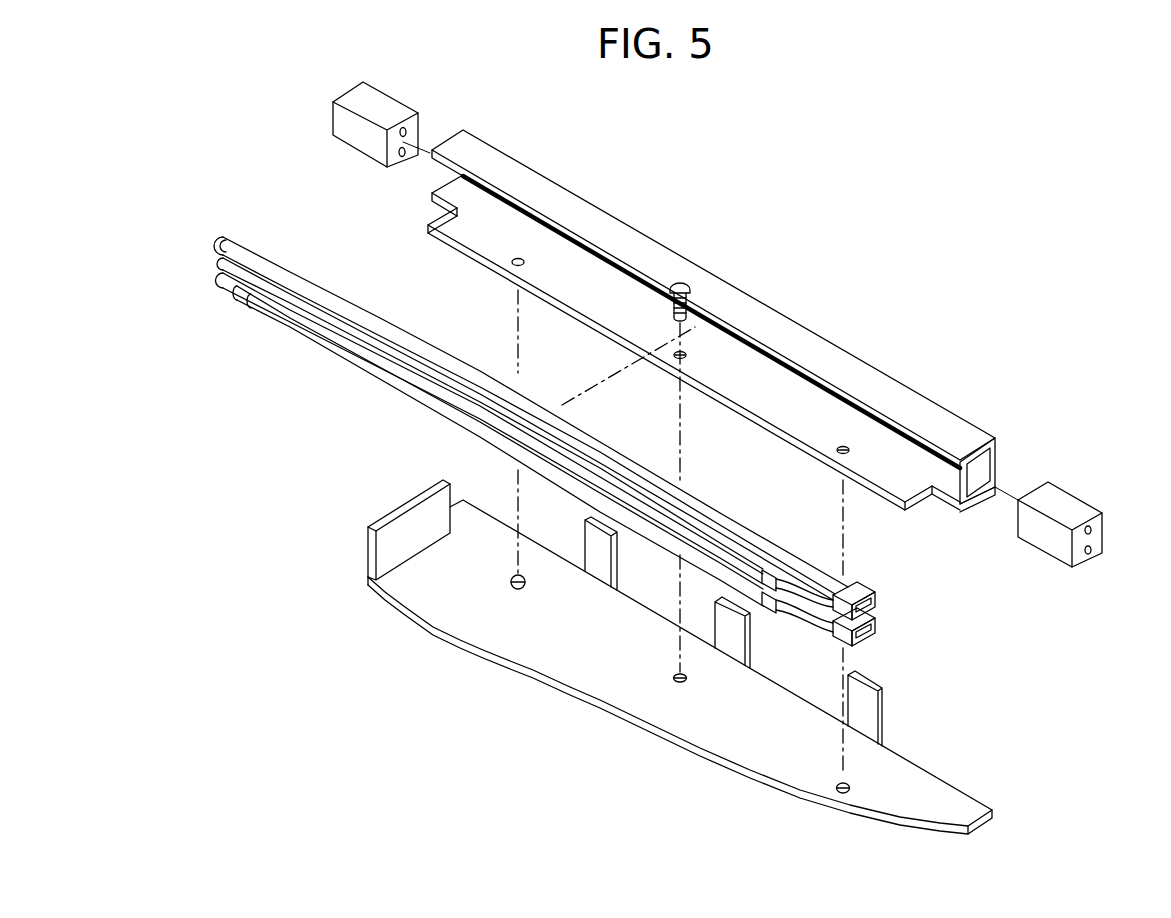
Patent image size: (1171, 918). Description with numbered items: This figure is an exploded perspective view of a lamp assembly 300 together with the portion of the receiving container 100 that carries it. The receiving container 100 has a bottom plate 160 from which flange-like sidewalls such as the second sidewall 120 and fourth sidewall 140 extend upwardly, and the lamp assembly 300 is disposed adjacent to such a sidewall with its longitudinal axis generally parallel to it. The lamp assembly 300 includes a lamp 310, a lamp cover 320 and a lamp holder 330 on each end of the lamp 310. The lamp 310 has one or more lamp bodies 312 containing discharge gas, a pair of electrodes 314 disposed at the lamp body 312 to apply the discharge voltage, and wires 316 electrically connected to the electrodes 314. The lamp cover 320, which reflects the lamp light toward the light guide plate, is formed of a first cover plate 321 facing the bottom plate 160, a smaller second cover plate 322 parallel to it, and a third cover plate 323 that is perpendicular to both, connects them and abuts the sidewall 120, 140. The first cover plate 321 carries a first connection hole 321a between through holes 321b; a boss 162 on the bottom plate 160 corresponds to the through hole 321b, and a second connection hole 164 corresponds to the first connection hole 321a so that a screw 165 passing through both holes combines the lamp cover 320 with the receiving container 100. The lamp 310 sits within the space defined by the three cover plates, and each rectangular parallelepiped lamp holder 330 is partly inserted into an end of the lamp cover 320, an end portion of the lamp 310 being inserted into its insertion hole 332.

The receiving container 100 is at (715, 657).
The second sidewall 120 is at (796, 631).
The fourth sidewall 140 is at (868, 703).
The bottom plate 160 is at (950, 792).
The boss 162 is at (526, 583).
The second connection hole 164 is at (689, 679).
The screw 165 is at (684, 284).
The lamp assembly 300 is at (719, 324).
The lamp 310 is at (524, 417).
The lamp body 312 is at (262, 287).
The electrode 314 is at (776, 574).
The wire 316 is at (789, 588).
The lamp cover 320 is at (753, 335).
The first cover plate 321 is at (906, 479).
The first connection hole 321a is at (679, 352).
The through hole 321b is at (841, 447).
The second cover plate 322 is at (948, 430).
The third cover plate 323 is at (988, 462).
The lamp holder 330 is at (360, 174).
The insertion hole 332 is at (1092, 530).